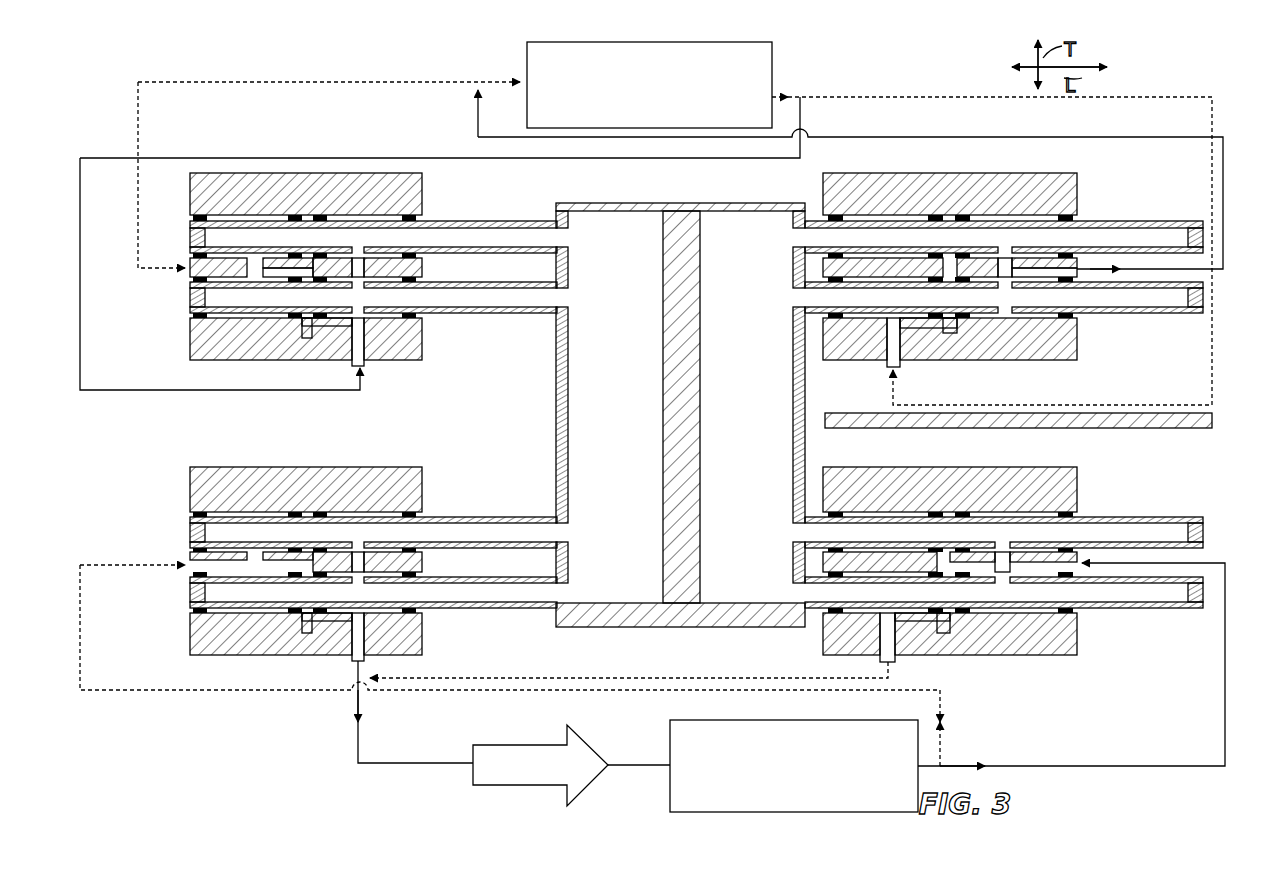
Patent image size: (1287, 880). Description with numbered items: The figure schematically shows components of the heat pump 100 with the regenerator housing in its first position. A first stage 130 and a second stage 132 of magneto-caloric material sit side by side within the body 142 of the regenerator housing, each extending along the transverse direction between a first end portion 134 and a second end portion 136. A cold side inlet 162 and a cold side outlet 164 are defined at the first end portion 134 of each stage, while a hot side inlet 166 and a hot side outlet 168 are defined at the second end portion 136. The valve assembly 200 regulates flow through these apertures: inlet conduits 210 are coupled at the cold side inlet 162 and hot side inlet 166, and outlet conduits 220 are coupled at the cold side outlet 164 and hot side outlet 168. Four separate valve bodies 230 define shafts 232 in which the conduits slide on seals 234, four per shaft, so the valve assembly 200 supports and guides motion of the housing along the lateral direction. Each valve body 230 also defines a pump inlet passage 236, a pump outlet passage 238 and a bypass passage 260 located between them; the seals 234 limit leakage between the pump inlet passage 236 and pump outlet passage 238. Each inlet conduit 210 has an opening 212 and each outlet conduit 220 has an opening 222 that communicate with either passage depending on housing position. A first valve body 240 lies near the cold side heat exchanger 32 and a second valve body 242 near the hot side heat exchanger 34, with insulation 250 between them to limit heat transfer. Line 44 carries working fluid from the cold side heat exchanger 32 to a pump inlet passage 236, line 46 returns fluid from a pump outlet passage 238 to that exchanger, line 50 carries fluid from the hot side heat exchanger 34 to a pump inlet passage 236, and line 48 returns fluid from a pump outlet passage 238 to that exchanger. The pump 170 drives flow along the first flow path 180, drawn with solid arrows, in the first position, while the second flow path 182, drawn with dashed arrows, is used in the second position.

The cold side heat exchanger 32 is at (772, 45).
The hot side heat exchanger 34 is at (780, 812).
The line 44 is at (348, 158).
The line 46 is at (142, 147).
The line 48 is at (358, 763).
The line 50 is at (80, 610).
The heat pump 100 is at (95, 97).
The first stage 130 is at (593, 397).
The second stage 132 is at (762, 397).
The first end portion 134 is at (684, 196).
The second end portion 136 is at (690, 637).
The body 142 is at (700, 460).
The cold side inlet 162 is at (571, 297).
The cold side outlet 164 is at (571, 238).
The hot side inlet 166 is at (571, 532).
The hot side outlet 168 is at (571, 600).
The pump 170 is at (530, 786).
The first flow path 180 is at (79, 160).
The second flow path 182 is at (1212, 95).
The valve assembly 200 is at (138, 428).
The inlet conduit 210 is at (500, 313).
The opening 212 is at (357, 336).
The outlet conduit 220 is at (488, 221).
The opening 222 is at (357, 242).
The valve body 230 is at (422, 350).
The shaft 232 is at (255, 215).
The seal 234 is at (295, 216).
The pump inlet passage 236 is at (368, 352).
The pump outlet passage 238 is at (245, 270).
The first valve body 240 is at (1005, 192).
The second valve body 242 is at (996, 660).
The insulation 250 is at (1200, 429).
The bypass passage 260 is at (248, 320).